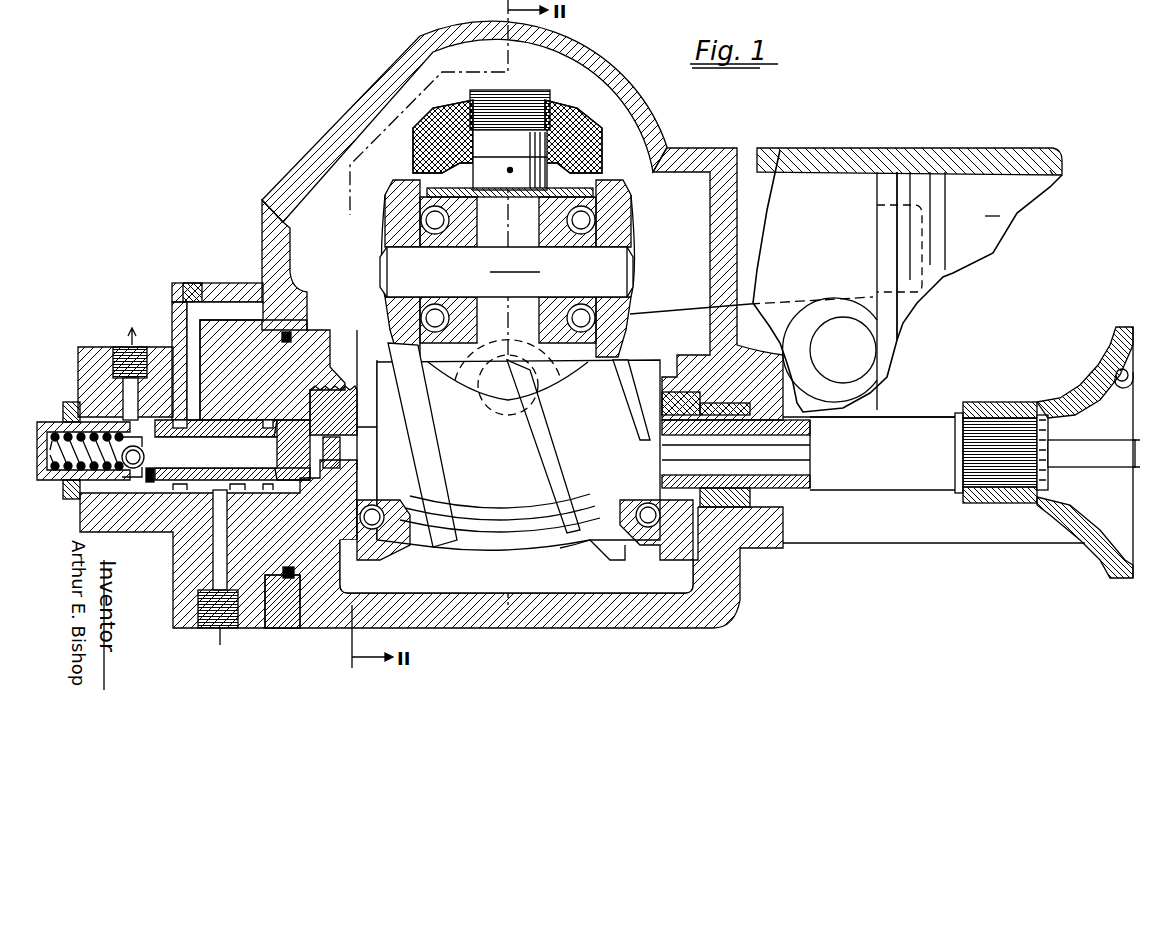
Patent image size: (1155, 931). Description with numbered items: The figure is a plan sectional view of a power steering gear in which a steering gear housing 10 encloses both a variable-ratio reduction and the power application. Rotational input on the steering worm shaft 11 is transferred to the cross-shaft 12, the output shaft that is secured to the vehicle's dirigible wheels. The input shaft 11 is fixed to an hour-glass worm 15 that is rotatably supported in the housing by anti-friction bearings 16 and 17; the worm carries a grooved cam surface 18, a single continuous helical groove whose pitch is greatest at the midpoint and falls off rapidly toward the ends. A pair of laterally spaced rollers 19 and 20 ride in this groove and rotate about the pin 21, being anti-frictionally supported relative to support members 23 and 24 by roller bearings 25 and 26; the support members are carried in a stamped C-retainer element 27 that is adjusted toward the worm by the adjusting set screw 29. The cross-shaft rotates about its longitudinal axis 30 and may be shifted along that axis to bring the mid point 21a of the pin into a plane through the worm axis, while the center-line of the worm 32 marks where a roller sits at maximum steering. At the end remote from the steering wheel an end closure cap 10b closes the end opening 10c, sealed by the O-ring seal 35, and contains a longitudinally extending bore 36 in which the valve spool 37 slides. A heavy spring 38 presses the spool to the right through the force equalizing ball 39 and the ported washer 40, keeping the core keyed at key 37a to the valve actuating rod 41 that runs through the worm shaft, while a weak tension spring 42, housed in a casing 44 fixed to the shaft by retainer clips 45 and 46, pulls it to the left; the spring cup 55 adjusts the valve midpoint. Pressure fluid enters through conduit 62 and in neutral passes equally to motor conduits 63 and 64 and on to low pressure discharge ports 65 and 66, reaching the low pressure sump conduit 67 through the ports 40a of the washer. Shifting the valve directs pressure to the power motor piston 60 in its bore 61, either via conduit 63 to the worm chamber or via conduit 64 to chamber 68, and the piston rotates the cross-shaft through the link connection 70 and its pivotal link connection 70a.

The steering gear housing 10 is at (715, 620).
The end closure cap 10b is at (218, 287).
The end opening 10c is at (277, 580).
The steering worm shaft 11 is at (900, 477).
The cross-shaft 12 is at (567, 118).
The hour-glass worm 15 is at (615, 562).
The anti-friction bearing 16 is at (378, 565).
The anti-friction bearing 17 is at (667, 540).
The grooved cam surface 18 is at (577, 550).
The roller 19 is at (393, 185).
The roller 20 is at (622, 207).
The pin 21 is at (407, 257).
The mid point of pin 21a is at (508, 270).
The support member 23 is at (465, 233).
The support member 24 is at (543, 238).
The roller bearing 25 is at (421, 218).
The roller bearing 26 is at (595, 227).
The C-retainer element 27 is at (580, 186).
The adjusting set screw 29 is at (527, 92).
The longitudinal axis of cross shaft 30 is at (512, 170).
The center-line of the worm 32 is at (513, 570).
The O-ring seal 35 is at (293, 580).
The longitudinally extending bore 36 is at (177, 347).
The valve spool 37 is at (162, 482).
The key 37a is at (315, 453).
The heavy spring 38 is at (53, 423).
The force equalizing ball 39 is at (50, 452).
The ported washer 40 is at (143, 485).
The ports 40a is at (133, 487).
The valve actuating rod 41 is at (1103, 462).
The weak tension spring 42 is at (1118, 381).
The casing 44 is at (1093, 557).
The retainer clip 45 is at (957, 413).
The retainer clip 46 is at (1031, 398).
The spring cup 55 is at (50, 492).
The power motor piston 60 is at (915, 182).
The bore 61 is at (1010, 172).
The conduit 62 is at (213, 563).
The motor conduit 63 is at (182, 302).
The motor conduit 64 is at (187, 320).
The low pressure discharge port 65 is at (172, 437).
The low pressure discharge port 66 is at (267, 440).
The low pressure sump conduit 67 is at (118, 400).
The chamber 68 is at (907, 281).
The link connection 70 is at (673, 313).
The pivotal link connection 70a is at (513, 363).